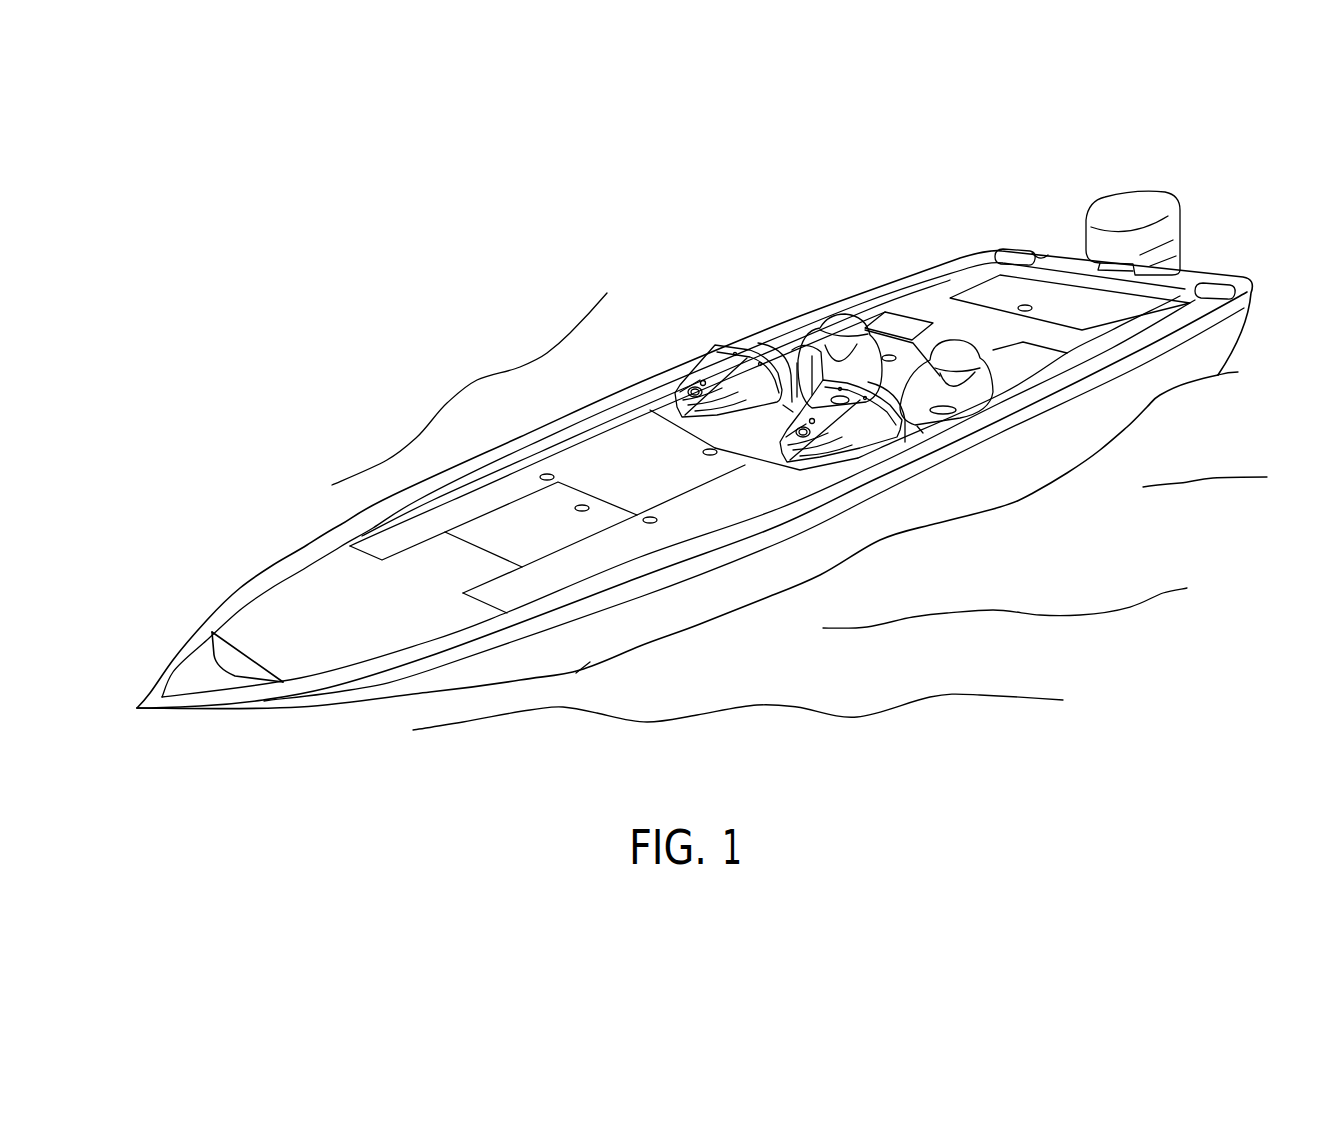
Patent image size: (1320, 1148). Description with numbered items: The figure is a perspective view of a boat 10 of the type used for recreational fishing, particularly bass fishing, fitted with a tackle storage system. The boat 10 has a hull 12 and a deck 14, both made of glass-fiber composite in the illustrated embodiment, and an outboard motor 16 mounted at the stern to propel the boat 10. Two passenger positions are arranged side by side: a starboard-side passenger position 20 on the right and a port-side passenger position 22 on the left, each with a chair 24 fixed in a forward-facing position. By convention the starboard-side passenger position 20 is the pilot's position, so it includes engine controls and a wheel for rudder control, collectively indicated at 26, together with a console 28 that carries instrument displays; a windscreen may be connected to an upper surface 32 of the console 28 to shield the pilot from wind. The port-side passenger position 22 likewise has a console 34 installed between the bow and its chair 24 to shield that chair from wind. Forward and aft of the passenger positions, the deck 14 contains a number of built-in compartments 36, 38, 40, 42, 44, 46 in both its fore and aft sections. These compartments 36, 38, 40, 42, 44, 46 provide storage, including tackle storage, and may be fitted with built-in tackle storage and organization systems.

The boat 10 is at (702, 428).
The hull 12 is at (1130, 404).
The deck 14 is at (367, 634).
The outboard motor 16 is at (1123, 210).
The starboard-side passenger position 20 is at (771, 340).
The port-side passenger position 22 is at (888, 380).
The chair 24 is at (838, 318).
The engine controls and wheel 26 is at (752, 348).
The console 28 is at (689, 341).
The upper surface of the console 32 is at (693, 375).
The console 34 is at (798, 343).
The compartment 36 is at (671, 489).
The compartment 38 is at (550, 540).
The compartment 40 is at (515, 487).
The compartment 42 is at (711, 530).
The compartment 44 is at (910, 347).
The compartment 46 is at (1078, 315).